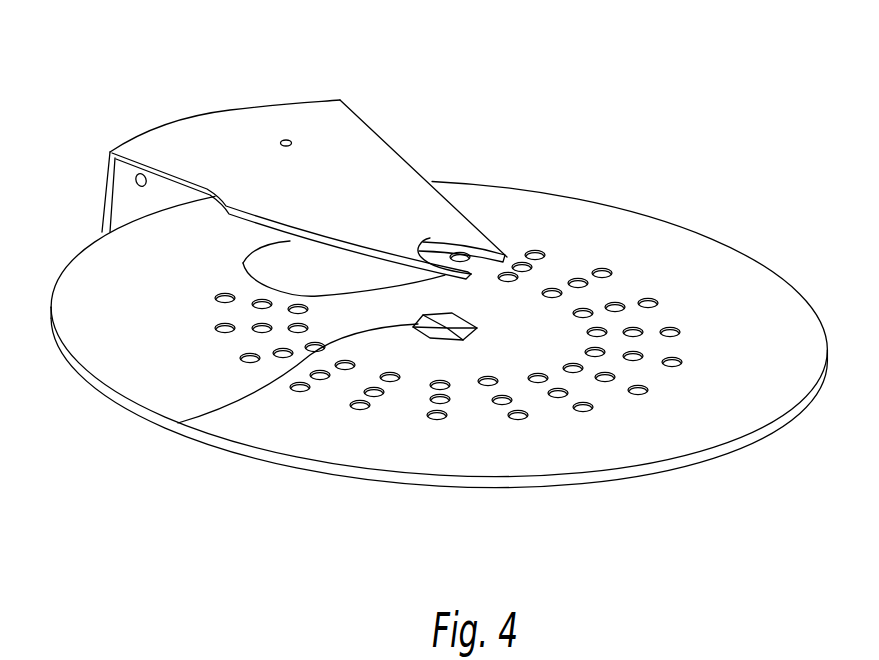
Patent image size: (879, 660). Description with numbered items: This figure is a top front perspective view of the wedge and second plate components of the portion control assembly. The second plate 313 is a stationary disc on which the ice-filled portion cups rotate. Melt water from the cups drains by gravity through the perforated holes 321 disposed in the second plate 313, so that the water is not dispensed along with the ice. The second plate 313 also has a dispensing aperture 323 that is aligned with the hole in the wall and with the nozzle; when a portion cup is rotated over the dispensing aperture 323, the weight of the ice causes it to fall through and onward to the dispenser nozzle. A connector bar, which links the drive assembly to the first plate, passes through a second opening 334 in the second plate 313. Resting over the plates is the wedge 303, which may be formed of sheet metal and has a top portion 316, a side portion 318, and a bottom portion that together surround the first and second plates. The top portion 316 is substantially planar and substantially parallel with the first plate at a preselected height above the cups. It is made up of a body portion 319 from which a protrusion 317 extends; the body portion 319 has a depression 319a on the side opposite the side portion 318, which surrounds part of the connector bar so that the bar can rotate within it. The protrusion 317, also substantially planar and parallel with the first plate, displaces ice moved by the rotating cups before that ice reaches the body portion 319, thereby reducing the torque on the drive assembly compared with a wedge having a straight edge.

The wedge 303 is at (120, 119).
The second plate 313 is at (329, 460).
The top portion 316 is at (380, 173).
The protrusion 317 is at (252, 206).
The side portion 318 is at (108, 190).
The body portion 319 is at (225, 133).
The depression 319a is at (430, 240).
The perforated holes 321 is at (606, 270).
The dispensing aperture 323 is at (256, 282).
The second opening 334 is at (178, 423).